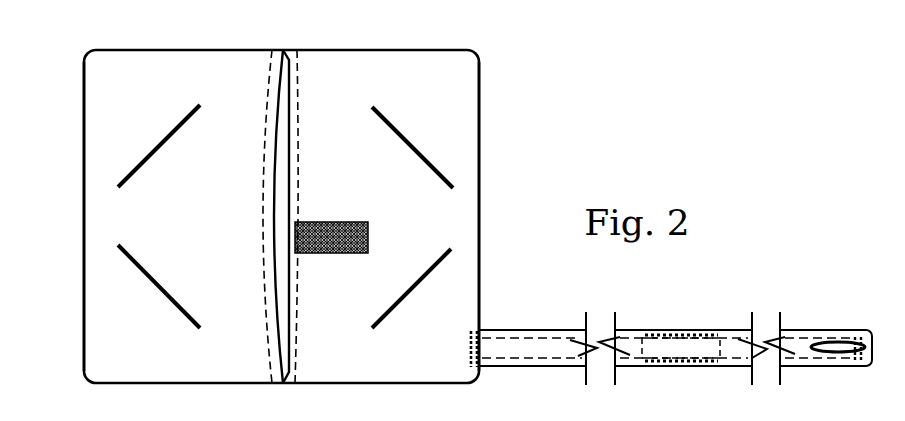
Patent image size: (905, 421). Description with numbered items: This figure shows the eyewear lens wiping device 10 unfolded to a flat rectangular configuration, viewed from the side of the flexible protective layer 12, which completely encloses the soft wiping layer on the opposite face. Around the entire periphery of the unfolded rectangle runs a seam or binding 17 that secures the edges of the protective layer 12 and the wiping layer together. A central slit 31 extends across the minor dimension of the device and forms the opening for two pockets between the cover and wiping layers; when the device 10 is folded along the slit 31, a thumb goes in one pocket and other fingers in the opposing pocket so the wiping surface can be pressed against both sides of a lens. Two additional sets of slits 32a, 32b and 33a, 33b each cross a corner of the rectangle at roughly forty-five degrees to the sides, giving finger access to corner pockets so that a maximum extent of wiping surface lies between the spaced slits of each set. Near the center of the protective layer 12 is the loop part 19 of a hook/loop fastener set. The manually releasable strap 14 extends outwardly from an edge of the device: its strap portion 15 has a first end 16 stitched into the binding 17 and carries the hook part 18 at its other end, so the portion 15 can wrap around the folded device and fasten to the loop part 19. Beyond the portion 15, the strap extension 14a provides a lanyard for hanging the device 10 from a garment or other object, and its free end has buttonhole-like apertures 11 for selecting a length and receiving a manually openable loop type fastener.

The eyewear lens wiping device 10 is at (483, 152).
The protective layer 12 is at (368, 60).
The seam or binding 17 is at (479, 197).
The central slit 31 is at (263, 70).
The corner slit 32b is at (155, 133).
The corner slit 33a is at (157, 292).
The corner slit 33b is at (410, 142).
The corner slit 32a is at (432, 275).
The loop part 19 is at (323, 253).
The first end 16 is at (478, 365).
The strap portion 15 is at (552, 335).
The manually releasable strap 14 is at (736, 336).
The hook part 18 is at (688, 348).
The strap extension 14a is at (808, 335).
The apertures 11 is at (838, 349).